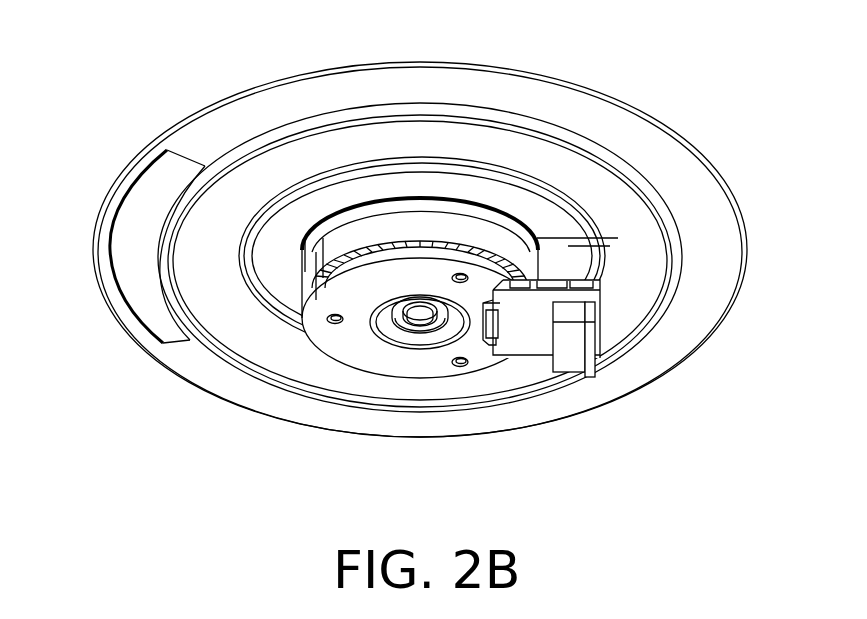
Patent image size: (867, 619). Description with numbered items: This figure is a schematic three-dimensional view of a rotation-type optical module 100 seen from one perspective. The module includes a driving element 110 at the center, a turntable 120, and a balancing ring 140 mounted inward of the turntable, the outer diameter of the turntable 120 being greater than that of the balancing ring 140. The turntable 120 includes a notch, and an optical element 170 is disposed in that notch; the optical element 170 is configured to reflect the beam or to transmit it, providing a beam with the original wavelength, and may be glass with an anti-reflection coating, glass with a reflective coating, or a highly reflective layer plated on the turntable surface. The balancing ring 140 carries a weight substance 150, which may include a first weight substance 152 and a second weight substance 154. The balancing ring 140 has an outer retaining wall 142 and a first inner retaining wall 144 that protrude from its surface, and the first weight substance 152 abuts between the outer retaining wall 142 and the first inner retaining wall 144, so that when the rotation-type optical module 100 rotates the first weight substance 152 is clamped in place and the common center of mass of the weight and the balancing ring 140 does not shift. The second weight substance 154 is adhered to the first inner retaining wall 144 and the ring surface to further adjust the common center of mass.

The rotation-type optical module 100 is at (434, 264).
The driving element 110 is at (357, 340).
The turntable 120 is at (675, 150).
The balancing ring 140 is at (637, 213).
The outer retaining wall 142 is at (577, 142).
The first inner retaining wall 144 is at (502, 167).
The weight substance 150 is at (657, 307).
The first weight substance 152 is at (580, 263).
The second weight substance 154 is at (657, 268).
The optical element 170 is at (127, 243).